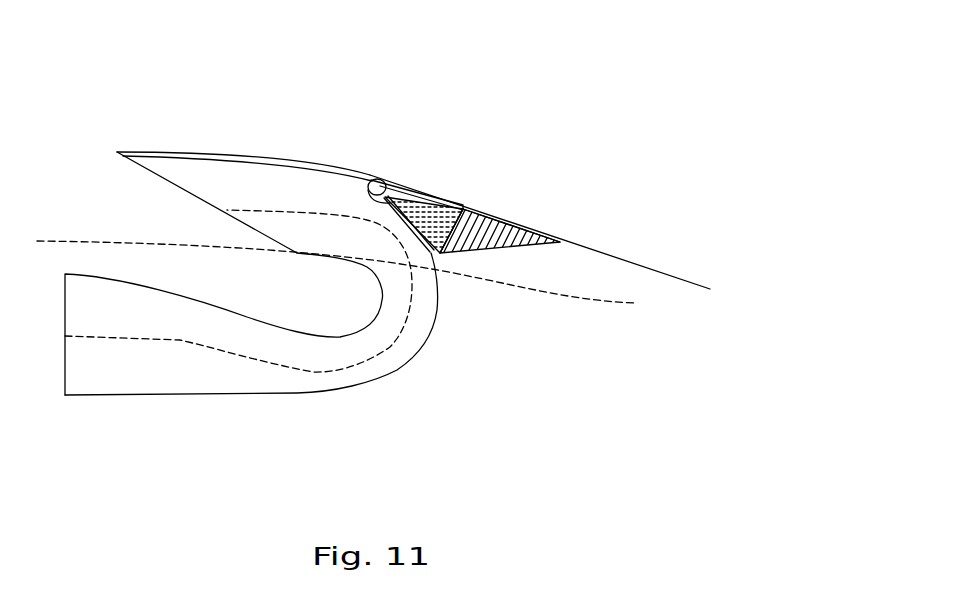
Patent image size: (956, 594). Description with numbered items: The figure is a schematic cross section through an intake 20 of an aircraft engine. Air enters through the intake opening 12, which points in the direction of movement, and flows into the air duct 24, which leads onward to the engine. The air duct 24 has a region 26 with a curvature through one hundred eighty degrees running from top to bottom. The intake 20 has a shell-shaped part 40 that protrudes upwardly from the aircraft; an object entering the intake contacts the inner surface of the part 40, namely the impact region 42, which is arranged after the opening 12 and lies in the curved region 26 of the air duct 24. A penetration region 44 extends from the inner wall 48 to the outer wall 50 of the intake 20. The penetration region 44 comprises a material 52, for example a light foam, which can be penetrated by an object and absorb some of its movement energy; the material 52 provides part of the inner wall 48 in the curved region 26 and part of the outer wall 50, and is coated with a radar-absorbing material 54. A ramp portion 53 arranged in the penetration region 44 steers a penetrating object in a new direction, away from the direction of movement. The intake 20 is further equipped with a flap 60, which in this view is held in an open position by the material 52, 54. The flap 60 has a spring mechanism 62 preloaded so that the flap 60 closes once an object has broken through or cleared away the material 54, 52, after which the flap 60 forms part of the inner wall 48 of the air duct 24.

The intake opening 12 is at (178, 186).
The intake 20 is at (464, 81).
The air duct 24 is at (193, 370).
The region with a curvature 26 is at (408, 358).
The shell-shaped part 40 is at (296, 157).
The impact region 42 is at (366, 177).
The penetration region 44 is at (516, 139).
The inner wall 48 is at (430, 325).
The outer wall 50 is at (537, 230).
The material 52 is at (473, 237).
The ramp portion 53 is at (512, 230).
The radar-absorbing material 54 is at (449, 243).
The flap 60 is at (425, 198).
The spring mechanism 62 is at (385, 178).